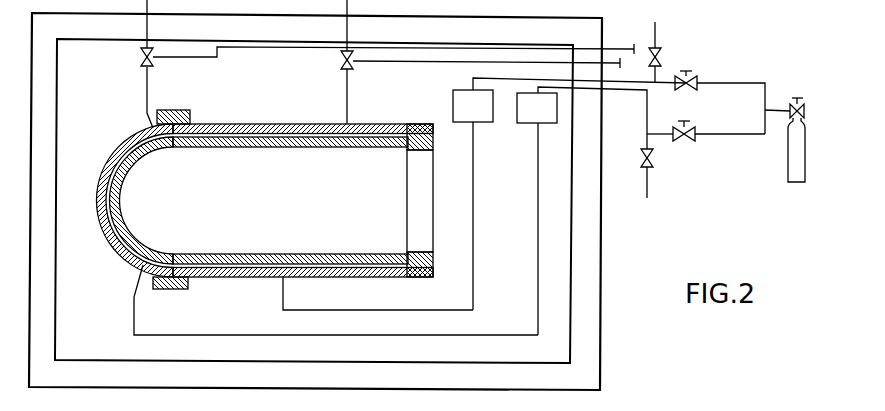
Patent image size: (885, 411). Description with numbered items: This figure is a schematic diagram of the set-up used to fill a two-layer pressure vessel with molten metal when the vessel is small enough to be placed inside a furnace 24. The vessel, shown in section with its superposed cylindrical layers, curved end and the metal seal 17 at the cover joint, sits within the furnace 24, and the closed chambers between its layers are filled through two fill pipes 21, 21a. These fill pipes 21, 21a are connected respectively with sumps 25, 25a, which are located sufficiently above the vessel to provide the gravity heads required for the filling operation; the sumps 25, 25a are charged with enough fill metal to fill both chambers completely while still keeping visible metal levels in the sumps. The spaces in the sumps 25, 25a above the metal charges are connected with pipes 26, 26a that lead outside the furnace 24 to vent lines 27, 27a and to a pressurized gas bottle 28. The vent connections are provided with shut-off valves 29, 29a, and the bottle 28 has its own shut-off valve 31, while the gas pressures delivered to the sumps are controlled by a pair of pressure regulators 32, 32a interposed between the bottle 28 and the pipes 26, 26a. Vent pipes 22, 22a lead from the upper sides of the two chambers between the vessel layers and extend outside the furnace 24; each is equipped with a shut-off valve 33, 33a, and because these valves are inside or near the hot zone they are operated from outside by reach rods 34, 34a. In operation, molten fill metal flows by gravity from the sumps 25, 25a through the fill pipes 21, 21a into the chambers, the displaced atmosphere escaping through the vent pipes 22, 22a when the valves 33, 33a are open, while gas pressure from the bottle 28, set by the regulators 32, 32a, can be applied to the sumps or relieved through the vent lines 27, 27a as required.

The metal seal 17 is at (359, 255).
The fill pipe 21 is at (284, 303).
The fill pipe 21a is at (135, 312).
The vent pipe 22 is at (345, 97).
The vent pipe 22a is at (148, 88).
The furnace 24 is at (588, 259).
The sump 25 is at (452, 104).
The sump 25a is at (518, 124).
The pipe 26 is at (640, 81).
The pipe 26a is at (614, 92).
The vent line 27 is at (657, 26).
The vent line 27a is at (649, 190).
The pressurized gas bottle 28 is at (806, 151).
The shut-off valve 29 is at (660, 58).
The shut-off valve 29a is at (649, 160).
The shut-off valve 31 is at (806, 108).
The pressure regulator 32 is at (699, 79).
The pressure regulator 32a is at (695, 127).
The shut-off valve 33 is at (340, 64).
The shut-off valve 33a is at (140, 60).
The reach rod 34 is at (399, 62).
The reach rod 34a is at (437, 47).